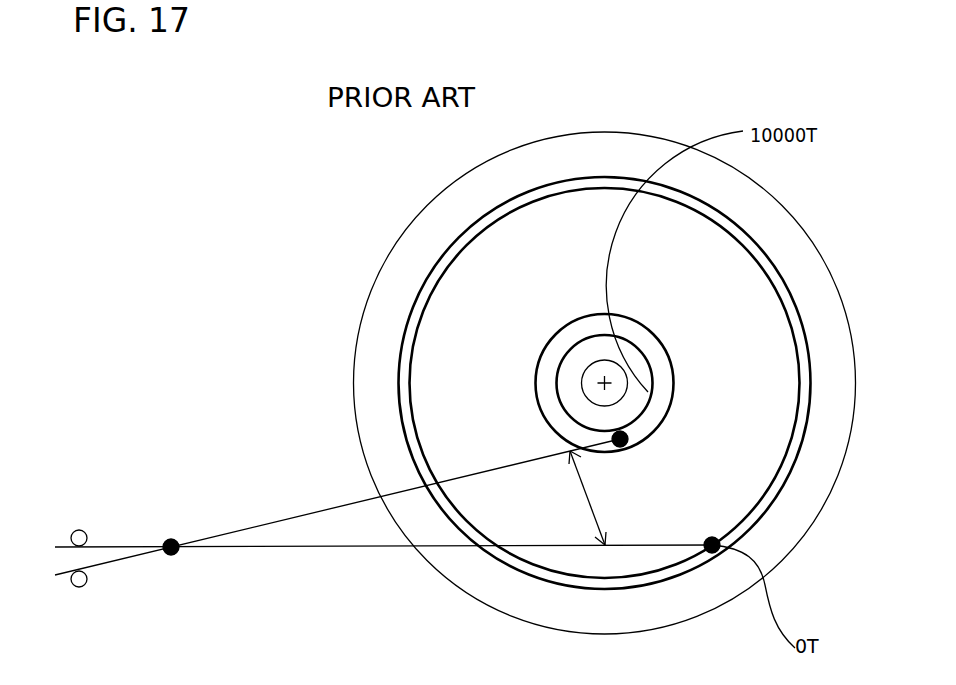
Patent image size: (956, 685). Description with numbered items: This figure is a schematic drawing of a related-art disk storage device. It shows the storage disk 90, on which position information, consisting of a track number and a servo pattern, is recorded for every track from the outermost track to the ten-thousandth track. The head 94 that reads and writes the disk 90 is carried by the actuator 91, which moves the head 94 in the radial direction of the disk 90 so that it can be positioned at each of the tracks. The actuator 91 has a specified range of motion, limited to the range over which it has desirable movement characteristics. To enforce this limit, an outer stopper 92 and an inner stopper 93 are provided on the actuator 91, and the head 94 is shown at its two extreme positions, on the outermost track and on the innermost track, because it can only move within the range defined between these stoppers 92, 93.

The storage disk 90 is at (354, 384).
The actuator 91 is at (298, 547).
The outer stopper 92 is at (157, 510).
The inner stopper 93 is at (77, 588).
The head 94 is at (627, 442).